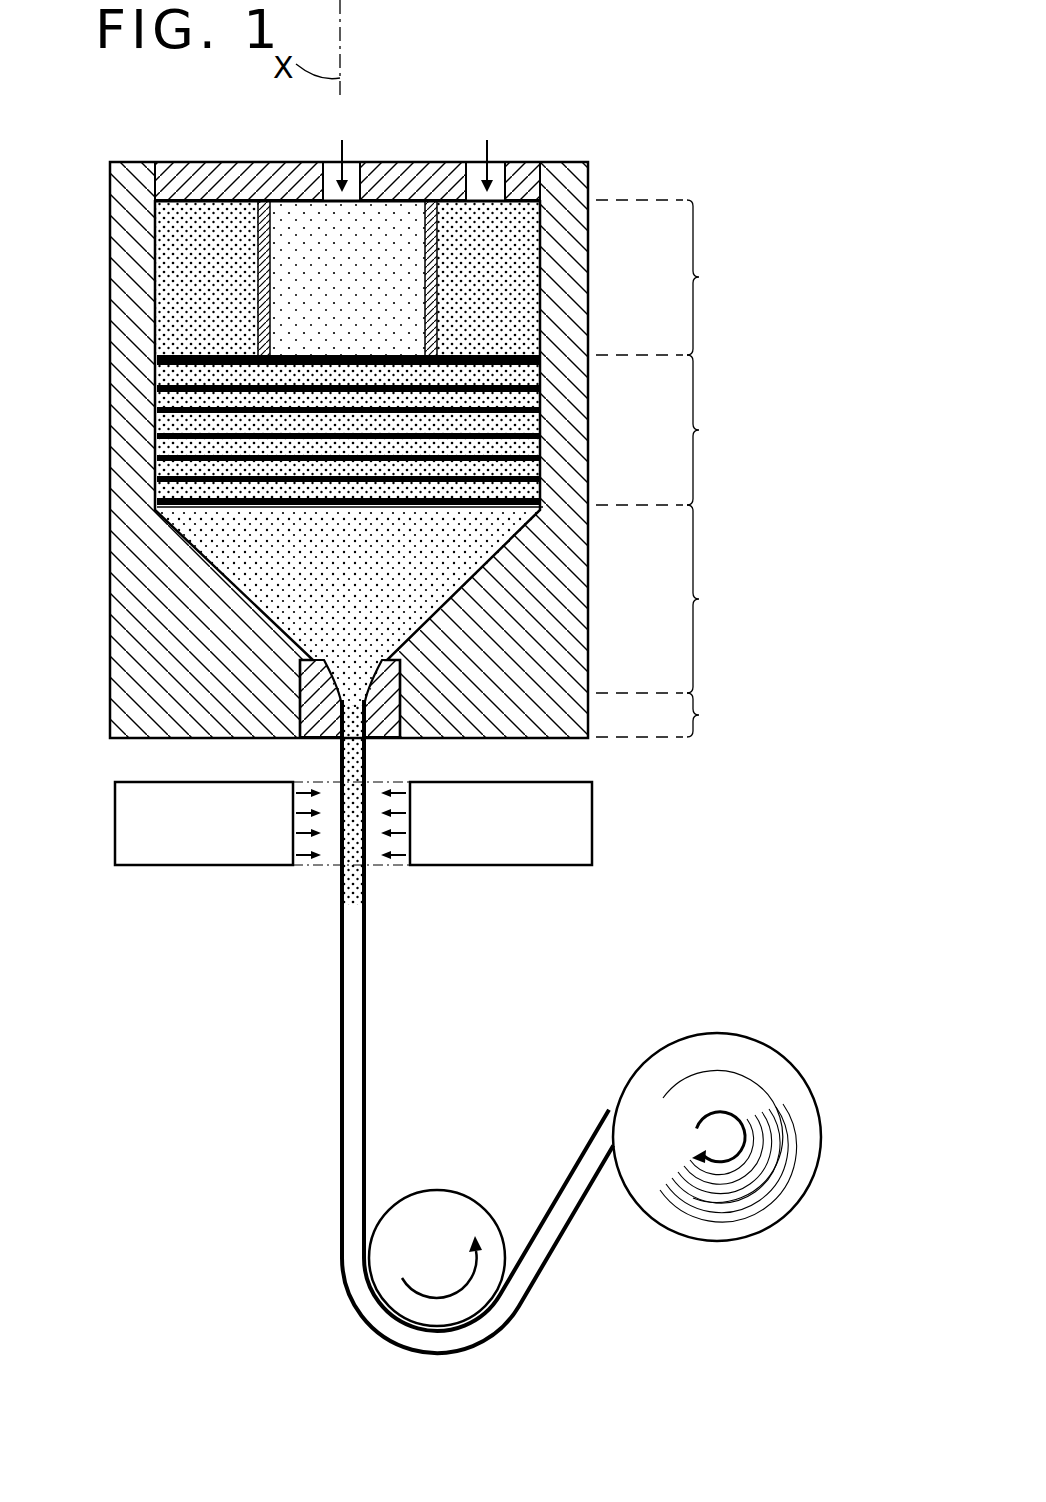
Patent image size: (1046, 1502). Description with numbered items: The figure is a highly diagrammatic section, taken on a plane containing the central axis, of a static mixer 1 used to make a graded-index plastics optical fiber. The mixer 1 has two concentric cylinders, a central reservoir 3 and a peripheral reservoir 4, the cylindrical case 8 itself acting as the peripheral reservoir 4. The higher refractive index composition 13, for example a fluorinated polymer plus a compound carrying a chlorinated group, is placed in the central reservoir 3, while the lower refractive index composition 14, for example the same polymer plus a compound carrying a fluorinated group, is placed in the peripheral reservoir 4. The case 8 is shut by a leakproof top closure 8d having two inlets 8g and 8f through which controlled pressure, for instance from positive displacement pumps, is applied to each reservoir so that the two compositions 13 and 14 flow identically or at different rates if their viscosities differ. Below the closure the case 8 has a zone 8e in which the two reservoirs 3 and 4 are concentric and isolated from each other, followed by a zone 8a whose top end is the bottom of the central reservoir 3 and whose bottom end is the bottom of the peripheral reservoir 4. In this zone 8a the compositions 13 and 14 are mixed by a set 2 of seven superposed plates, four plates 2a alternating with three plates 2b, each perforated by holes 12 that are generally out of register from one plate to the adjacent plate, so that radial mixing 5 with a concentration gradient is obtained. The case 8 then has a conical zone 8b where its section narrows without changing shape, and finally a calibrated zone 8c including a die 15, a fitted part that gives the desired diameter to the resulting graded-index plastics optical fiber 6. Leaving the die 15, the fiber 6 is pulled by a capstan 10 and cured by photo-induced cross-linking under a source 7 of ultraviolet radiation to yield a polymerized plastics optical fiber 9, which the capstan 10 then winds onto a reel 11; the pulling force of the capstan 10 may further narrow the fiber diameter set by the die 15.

The static mixer 1 is at (618, 176).
The set of superposed plates 2 is at (350, 446).
The plate 2a is at (157, 390).
The plate 2b is at (540, 478).
The central reservoir 3 is at (255, 240).
The peripheral reservoir 4 is at (283, 153).
The mixing 5 is at (255, 547).
The graded-index plastics optical fiber 6 is at (366, 757).
The source of ultraviolet radiation 7 is at (592, 818).
The cylindrical case 8 is at (98, 306).
The mixing zone 8a is at (722, 430).
The conical zone 8b is at (722, 599).
The calibrated zone 8c is at (721, 715).
The leakproof top closure 8d is at (405, 196).
The isolation zone 8e is at (722, 277).
The inlet 8f is at (490, 196).
The inlet 8g is at (362, 196).
The polymerized plastics optical fiber 9 is at (345, 1017).
The capstan 10 is at (440, 1212).
The reel 11 is at (735, 1080).
The holes 12 is at (515, 372).
The higher refractive index composition 13 is at (300, 230).
The lower refractive index composition 14 is at (175, 256).
The die 15 is at (320, 740).